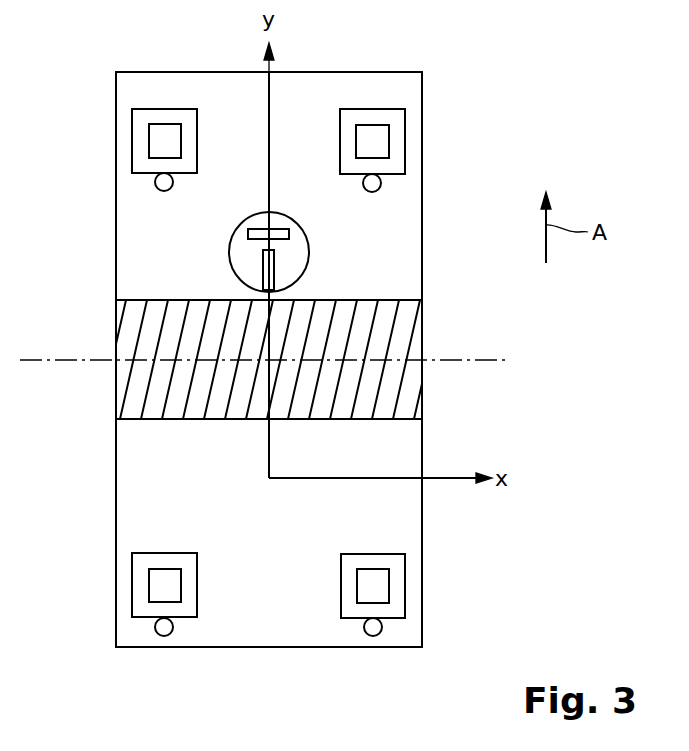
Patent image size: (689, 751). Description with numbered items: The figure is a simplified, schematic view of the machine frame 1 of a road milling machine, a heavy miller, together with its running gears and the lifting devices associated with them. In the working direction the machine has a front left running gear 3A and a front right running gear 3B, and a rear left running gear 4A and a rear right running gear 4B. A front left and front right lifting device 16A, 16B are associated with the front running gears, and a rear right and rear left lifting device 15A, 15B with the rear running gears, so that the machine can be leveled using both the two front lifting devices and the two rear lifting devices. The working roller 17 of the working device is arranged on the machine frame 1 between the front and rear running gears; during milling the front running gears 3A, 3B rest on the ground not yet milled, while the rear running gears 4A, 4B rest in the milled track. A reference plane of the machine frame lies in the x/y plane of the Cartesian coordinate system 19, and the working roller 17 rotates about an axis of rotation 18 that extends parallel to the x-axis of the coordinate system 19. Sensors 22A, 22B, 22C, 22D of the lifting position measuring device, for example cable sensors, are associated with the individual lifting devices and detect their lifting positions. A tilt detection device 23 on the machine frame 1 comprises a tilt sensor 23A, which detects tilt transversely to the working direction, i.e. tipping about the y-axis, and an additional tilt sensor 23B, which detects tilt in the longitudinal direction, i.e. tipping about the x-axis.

The machine frame 1 is at (450, 275).
The front left running gear 3A is at (132, 158).
The front right running gear 3B is at (405, 158).
The rear left running gear 4A is at (132, 603).
The rear right running gear 4B is at (405, 603).
The rear right lifting device 15A is at (149, 582).
The rear left lifting device 15B is at (389, 581).
The front left lifting device 16A is at (149, 137).
The front right lifting device 16B is at (389, 137).
The working roller 17 is at (404, 393).
The axis of rotation 18 is at (66, 359).
The Cartesian coordinate system 19 is at (268, 445).
The sensor 22A is at (164, 191).
The sensor 22B is at (164, 636).
The sensor 22C is at (371, 192).
The sensor 22D is at (373, 636).
The tilt detection device 23 is at (307, 264).
The tilt sensor 23A is at (274, 229).
The additional tilt sensor 23B is at (263, 262).